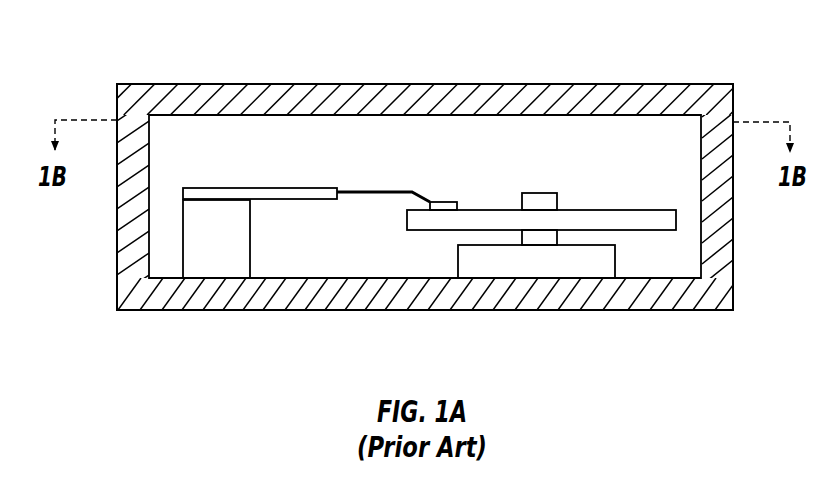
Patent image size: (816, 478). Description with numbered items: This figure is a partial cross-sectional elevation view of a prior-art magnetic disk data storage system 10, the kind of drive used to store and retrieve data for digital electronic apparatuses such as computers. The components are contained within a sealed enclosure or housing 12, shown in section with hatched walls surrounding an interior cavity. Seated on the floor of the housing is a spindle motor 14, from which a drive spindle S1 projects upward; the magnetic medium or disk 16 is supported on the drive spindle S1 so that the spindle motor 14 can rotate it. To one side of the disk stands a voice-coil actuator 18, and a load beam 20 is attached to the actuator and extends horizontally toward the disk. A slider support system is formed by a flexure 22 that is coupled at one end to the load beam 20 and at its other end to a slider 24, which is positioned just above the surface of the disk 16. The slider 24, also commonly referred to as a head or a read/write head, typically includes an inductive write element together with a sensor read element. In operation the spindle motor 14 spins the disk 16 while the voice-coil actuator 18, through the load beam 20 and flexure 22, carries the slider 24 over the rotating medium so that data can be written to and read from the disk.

The magnetic disk data storage system 10 is at (128, 64).
The sealed enclosure or housing 12 is at (610, 84).
The spindle motor 14 is at (603, 267).
The magnetic medium or disk 16 is at (617, 210).
The voice-coil actuator 18 is at (235, 247).
The load beam 20 is at (208, 188).
The flexure 22 is at (368, 187).
The slider 24 is at (458, 205).
The drive spindle S1 is at (543, 193).